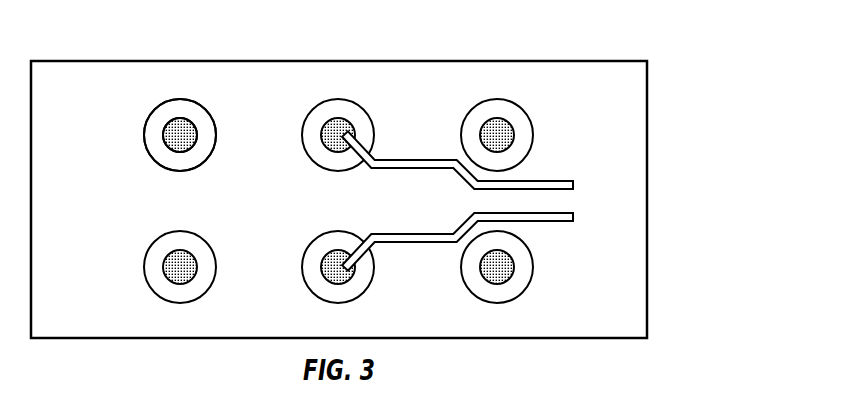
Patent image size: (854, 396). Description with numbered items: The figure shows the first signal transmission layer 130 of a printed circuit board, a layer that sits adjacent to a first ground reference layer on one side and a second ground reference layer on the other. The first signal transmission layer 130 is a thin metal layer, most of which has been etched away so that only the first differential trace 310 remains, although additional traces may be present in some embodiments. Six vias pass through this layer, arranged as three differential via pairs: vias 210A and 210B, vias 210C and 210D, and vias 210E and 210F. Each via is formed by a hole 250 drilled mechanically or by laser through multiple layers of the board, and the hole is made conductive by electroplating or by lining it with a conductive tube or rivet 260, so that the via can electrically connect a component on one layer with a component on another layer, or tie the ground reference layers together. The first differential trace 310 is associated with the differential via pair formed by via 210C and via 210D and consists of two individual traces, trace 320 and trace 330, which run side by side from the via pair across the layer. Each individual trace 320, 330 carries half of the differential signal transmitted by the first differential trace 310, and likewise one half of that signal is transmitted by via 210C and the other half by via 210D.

The first signal transmission layer 130 is at (671, 179).
The via 210A is at (181, 100).
The via 210B is at (180, 232).
The via 210C is at (338, 100).
The via 210D is at (338, 232).
The via 210E is at (497, 100).
The via 210F is at (497, 303).
The hole 250 is at (197, 135).
The conductive tube or rivet 260 is at (217, 147).
The first differential trace 310 is at (492, 200).
The individual trace 320 is at (531, 181).
The individual trace 330 is at (531, 221).